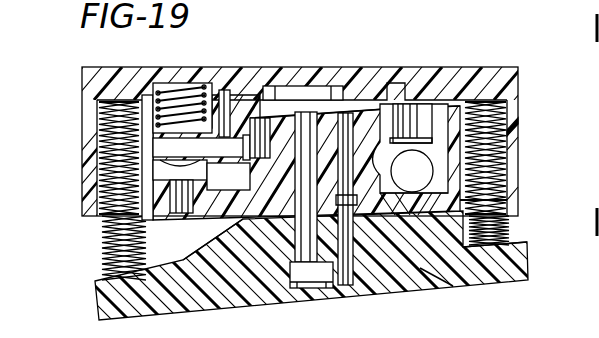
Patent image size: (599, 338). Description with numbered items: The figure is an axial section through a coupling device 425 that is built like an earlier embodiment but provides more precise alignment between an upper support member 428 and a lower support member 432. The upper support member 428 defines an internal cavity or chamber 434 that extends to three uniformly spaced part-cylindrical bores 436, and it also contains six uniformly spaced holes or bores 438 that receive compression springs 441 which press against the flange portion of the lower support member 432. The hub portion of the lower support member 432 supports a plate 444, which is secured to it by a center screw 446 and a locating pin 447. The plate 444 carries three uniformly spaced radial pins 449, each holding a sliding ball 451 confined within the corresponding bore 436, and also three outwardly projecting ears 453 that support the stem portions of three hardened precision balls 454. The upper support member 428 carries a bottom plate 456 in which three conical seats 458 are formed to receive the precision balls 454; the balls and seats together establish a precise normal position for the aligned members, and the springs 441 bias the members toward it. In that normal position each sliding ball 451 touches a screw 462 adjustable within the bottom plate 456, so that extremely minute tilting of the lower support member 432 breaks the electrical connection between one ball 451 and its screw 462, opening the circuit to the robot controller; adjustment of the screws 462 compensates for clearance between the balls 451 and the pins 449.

The coupling device 425 is at (366, 55).
The upper support member 428 is at (268, 70).
The lower support member 432 is at (518, 258).
The internal cavity or chamber 434 is at (440, 104).
The part-cylindrical bores 436 is at (117, 100).
The holes or bores 438 is at (508, 140).
The compression springs 441 is at (500, 163).
The plate 444 is at (322, 118).
The center screw 446 is at (318, 276).
The locating pin 447 is at (332, 117).
The radial pins 449 is at (229, 130).
The sliding ball 451 is at (156, 220).
The ears 453 is at (422, 108).
The precision balls 454 is at (510, 198).
The bottom plate 456 is at (456, 235).
The conical seats 458 is at (440, 218).
The screw 462 is at (190, 262).